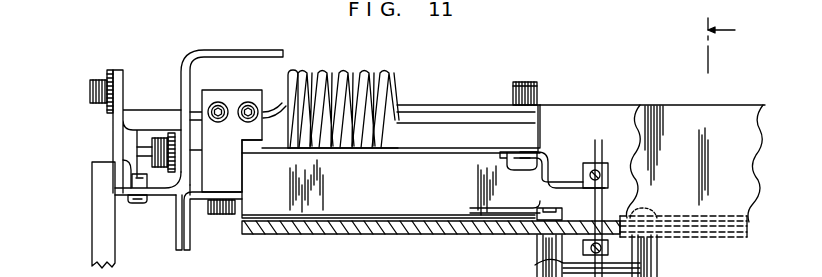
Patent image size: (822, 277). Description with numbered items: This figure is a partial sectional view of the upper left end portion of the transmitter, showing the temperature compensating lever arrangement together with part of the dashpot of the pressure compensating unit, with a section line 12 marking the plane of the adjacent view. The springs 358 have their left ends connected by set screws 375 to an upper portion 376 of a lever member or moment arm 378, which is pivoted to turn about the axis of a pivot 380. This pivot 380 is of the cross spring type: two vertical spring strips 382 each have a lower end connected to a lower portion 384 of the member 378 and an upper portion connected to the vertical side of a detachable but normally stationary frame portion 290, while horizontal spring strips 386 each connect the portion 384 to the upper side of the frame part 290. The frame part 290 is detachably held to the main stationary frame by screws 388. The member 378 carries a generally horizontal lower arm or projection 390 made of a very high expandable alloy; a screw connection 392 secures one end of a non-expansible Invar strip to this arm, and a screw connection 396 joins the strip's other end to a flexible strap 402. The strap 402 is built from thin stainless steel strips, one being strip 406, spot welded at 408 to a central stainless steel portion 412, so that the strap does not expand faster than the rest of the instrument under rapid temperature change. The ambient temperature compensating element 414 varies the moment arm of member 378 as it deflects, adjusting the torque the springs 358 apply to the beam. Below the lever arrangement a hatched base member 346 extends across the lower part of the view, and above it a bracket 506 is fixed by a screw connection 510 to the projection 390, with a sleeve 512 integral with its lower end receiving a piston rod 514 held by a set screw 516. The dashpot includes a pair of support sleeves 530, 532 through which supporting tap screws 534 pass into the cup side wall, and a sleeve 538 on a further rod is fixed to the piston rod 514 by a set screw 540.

The section line 12 is at (736, 45).
The detachable stationary frame portion 290 is at (185, 72).
The rail 346 is at (408, 236).
The springs 358 is at (352, 72).
The set screws 375 is at (248, 102).
The upper portion of lever member 376 is at (264, 89).
The lever member or moment arm 378 is at (230, 170).
The pivot 380 is at (172, 200).
The vertical spring strips 382 is at (175, 237).
The lower portion of abutment member 384 is at (188, 238).
The horizontal spring strips 386 is at (152, 196).
The screws 388 is at (152, 150).
The lower arm or projection 390 is at (475, 125).
The screw connection 392 is at (524, 82).
The screw connection 396 is at (90, 87).
The flexible strap 402 is at (88, 228).
The stainless steel strip 406 is at (115, 125).
The spot weld 408 is at (128, 166).
The central stainless steel portion 412 is at (97, 206).
The ambient temperature compensating element 414 is at (440, 107).
The bracket 506 is at (568, 165).
The screw connection 510 is at (507, 160).
The sleeve 512 is at (608, 173).
The piston rod 514 is at (573, 198).
The set screw 516 is at (604, 160).
The support sleeve 530 is at (538, 243).
The support sleeve 532 is at (660, 248).
The supporting tap screws 534 is at (643, 208).
The sleeve 538 is at (565, 252).
The set screw 540 is at (657, 262).